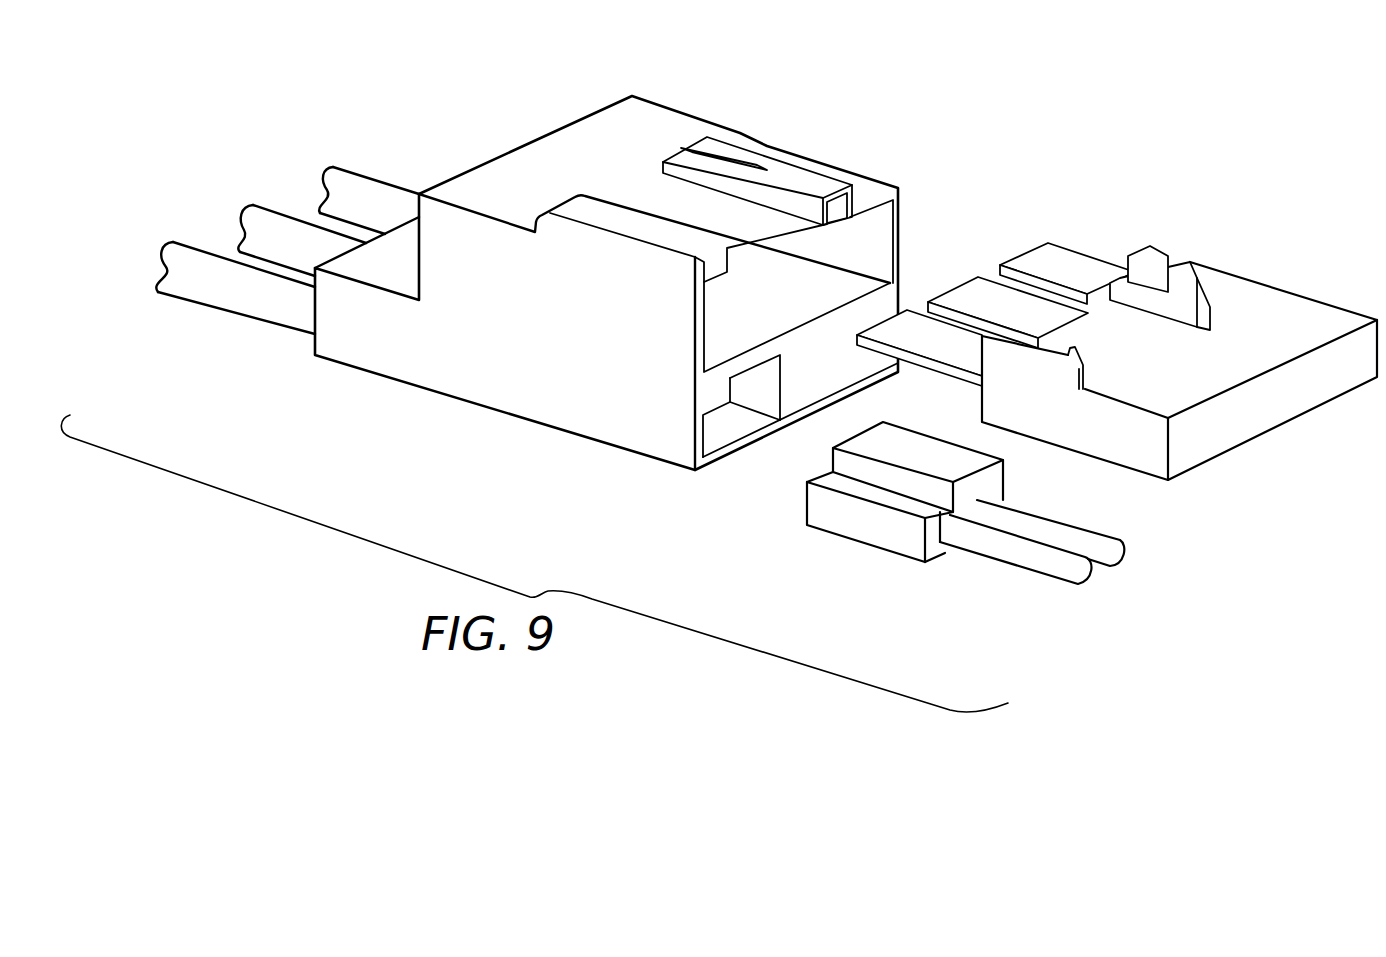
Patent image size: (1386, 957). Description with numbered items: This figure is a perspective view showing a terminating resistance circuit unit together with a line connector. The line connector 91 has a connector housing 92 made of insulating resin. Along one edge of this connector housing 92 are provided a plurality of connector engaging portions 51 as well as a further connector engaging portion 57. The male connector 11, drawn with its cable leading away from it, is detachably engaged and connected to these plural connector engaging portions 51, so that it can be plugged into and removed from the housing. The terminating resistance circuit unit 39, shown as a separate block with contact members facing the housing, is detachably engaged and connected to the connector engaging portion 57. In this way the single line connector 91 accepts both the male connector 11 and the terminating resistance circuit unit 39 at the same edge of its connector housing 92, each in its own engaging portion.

The connector housing 92 is at (652, 112).
The connector engaging portion 57 is at (874, 235).
The terminating resistance circuit unit 39 is at (1272, 322).
The line connector 91 is at (565, 300).
The connector engaging portion 51 is at (722, 433).
The male connector 11 is at (862, 523).